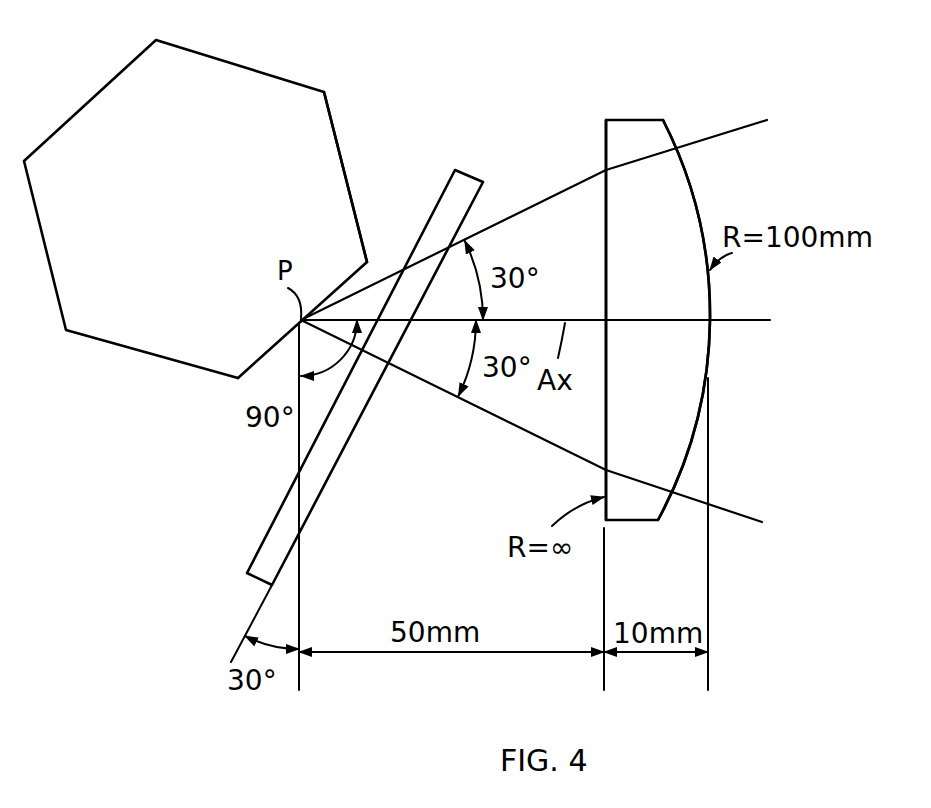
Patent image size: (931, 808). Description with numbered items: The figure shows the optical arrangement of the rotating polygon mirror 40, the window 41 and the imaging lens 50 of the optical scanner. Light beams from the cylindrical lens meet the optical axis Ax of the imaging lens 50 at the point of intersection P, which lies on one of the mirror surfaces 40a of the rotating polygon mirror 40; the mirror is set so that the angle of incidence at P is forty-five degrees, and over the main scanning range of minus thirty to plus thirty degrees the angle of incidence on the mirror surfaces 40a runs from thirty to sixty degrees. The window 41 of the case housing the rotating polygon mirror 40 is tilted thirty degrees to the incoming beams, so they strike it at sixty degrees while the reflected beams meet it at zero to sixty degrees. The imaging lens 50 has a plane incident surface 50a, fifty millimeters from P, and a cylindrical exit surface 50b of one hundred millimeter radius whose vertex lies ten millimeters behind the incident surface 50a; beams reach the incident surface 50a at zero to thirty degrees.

The rotating polygon mirror 40 is at (123, 312).
The mirror surfaces 40a is at (337, 146).
The window 41 is at (462, 190).
The imaging lens 50 is at (642, 127).
The incident surface 50a is at (606, 208).
The exit surface 50b is at (687, 181).